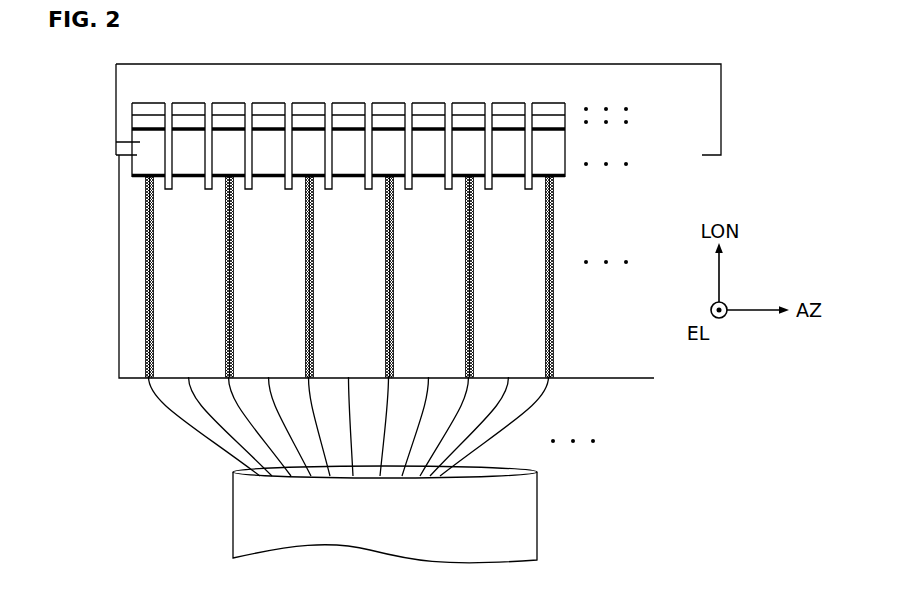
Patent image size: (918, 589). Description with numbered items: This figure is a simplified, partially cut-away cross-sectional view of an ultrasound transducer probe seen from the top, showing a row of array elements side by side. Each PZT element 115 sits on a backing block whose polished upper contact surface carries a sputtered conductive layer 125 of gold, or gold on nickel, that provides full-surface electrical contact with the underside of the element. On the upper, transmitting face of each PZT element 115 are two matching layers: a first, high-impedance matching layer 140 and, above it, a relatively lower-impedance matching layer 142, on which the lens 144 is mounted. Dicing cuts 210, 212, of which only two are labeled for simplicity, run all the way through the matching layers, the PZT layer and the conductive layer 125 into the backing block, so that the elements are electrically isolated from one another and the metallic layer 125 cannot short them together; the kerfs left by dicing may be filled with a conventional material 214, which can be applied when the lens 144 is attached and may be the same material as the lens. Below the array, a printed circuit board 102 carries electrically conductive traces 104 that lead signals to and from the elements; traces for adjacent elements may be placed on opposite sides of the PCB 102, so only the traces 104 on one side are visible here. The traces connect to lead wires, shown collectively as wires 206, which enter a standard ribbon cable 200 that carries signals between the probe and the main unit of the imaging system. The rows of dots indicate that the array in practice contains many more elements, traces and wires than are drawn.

The printed circuit board 102 is at (116, 239).
The electrically conductive traces 104 is at (150, 262).
The PZT element 115 is at (116, 143).
The conductive layer 125 is at (141, 177).
The first high-impedance matching layer 140 is at (128, 121).
The lower-impedance matching layer 142 is at (128, 109).
The lens 144 is at (607, 64).
The ribbon cable 200 is at (248, 517).
The lead wires 206 is at (155, 411).
The dicing cut 210 is at (173, 190).
The dicing cut 212 is at (208, 190).
The kerf fill material 214 is at (168, 107).